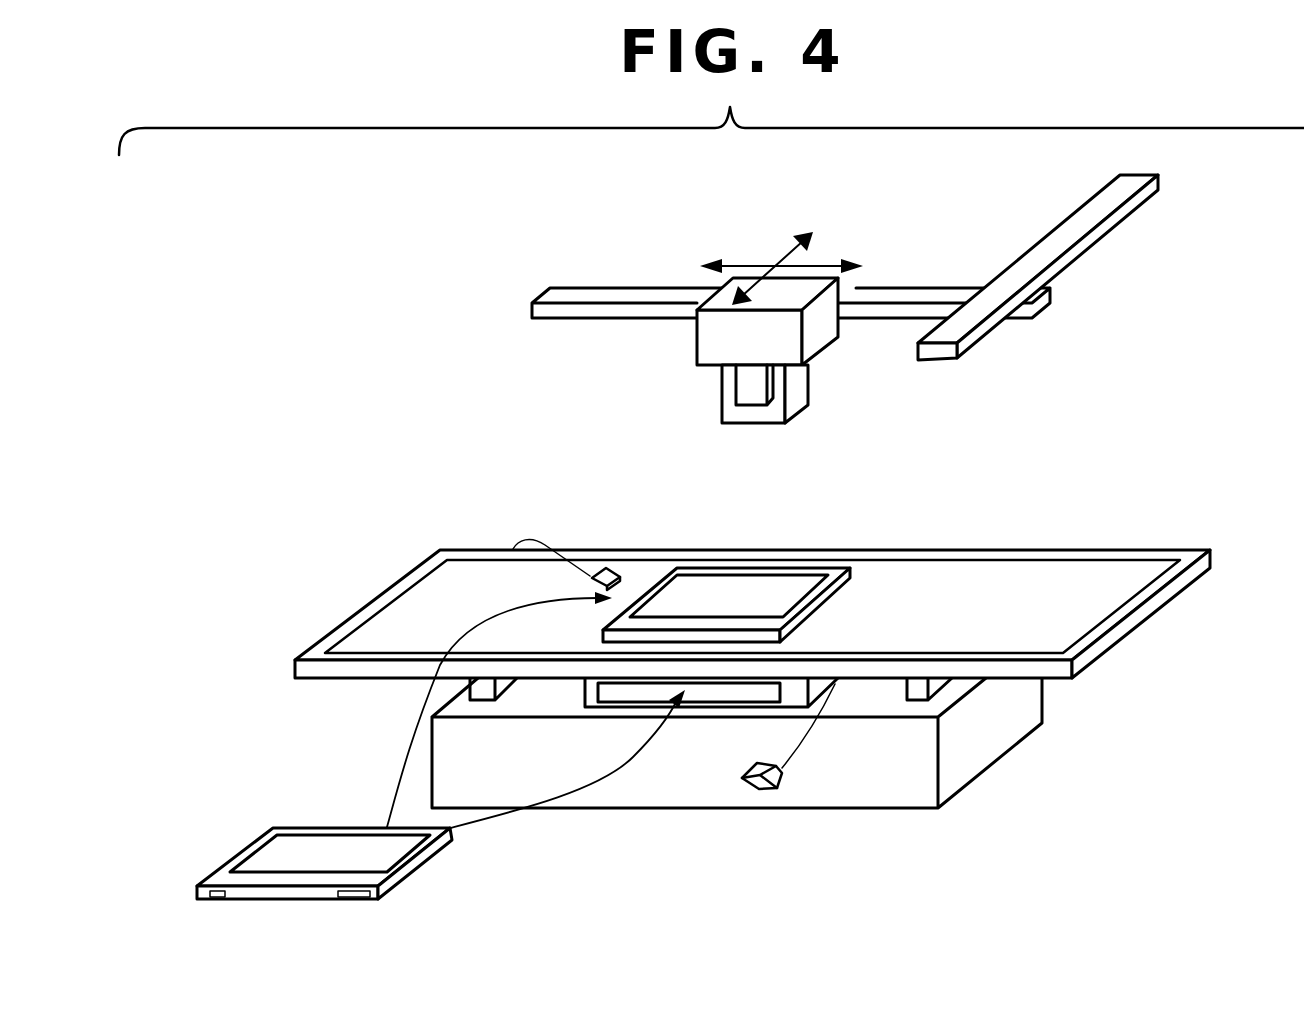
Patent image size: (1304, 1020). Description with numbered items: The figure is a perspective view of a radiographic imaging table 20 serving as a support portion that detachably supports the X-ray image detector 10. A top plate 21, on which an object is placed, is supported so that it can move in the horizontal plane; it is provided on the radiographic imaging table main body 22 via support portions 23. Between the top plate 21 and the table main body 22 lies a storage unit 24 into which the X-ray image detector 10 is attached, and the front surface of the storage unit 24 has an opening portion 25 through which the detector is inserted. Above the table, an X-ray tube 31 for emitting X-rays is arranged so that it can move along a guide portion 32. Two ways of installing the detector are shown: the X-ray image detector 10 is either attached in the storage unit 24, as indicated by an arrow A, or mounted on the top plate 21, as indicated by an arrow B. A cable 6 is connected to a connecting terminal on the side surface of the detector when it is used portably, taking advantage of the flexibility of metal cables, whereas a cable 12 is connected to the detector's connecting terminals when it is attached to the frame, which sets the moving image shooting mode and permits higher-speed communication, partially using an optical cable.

The cable 6 is at (543, 538).
The X-ray image detector 10 is at (312, 855).
The cable 12 is at (797, 750).
The radiographic imaging table 20 is at (1105, 508).
The top plate 21 is at (1148, 612).
The radiographic imaging table main body 22 is at (912, 782).
The support portions 23 is at (918, 690).
The storage unit 24 is at (812, 690).
The opening portion 25 is at (717, 692).
The X-ray tube 31 is at (793, 398).
The guide portion 32 is at (1035, 265).
The arrow A is at (608, 780).
The arrow B is at (483, 623).